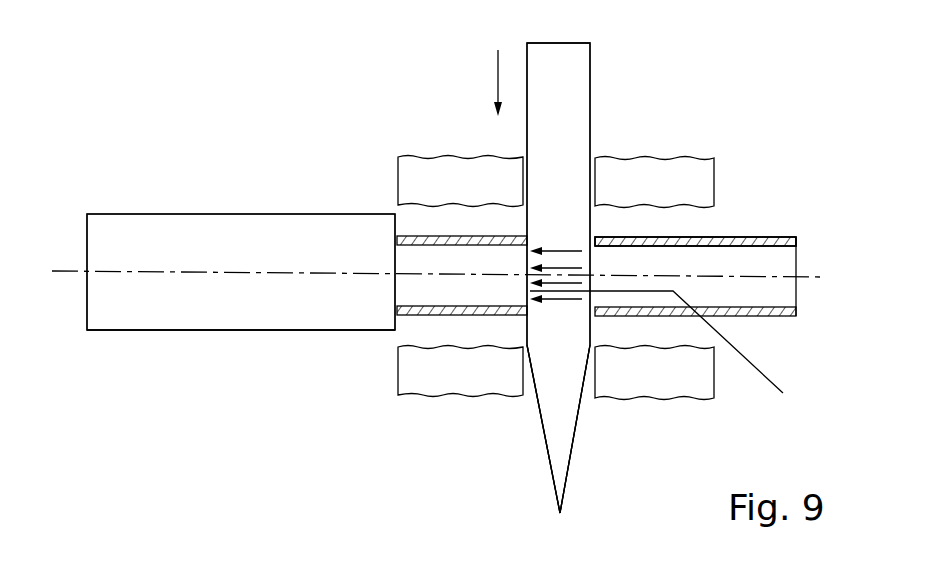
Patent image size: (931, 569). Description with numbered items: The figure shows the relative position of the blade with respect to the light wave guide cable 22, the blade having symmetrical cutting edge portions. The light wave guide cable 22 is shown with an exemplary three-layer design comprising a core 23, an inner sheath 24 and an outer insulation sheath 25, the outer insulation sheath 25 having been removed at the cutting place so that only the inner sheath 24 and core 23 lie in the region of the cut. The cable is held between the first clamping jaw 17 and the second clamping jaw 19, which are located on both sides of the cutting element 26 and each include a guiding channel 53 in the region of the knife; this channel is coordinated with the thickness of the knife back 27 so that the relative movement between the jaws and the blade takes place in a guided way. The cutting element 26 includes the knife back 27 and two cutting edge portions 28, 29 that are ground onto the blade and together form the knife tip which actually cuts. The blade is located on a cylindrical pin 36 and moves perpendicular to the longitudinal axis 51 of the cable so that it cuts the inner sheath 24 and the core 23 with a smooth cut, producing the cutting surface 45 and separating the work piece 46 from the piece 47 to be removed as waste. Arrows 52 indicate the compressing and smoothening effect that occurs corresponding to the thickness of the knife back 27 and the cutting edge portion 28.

The first clamping jaw 17 is at (437, 172).
The second clamping jaw 19 is at (422, 384).
The light wave guide cable 22 is at (182, 178).
The core 23 is at (757, 263).
The inner sheath 24 is at (742, 242).
The outer insulation sheath 25 is at (129, 236).
The cutting element 26 is at (604, 56).
The knife back 27 is at (560, 106).
The cutting edge portion 28 is at (545, 449).
The cutting edge portion 29 is at (572, 458).
The cylindrical pin 36 is at (498, 80).
The cutting surface 45 is at (673, 350).
The work piece 46 is at (289, 342).
The piece to be removed 47 is at (725, 215).
The longitudinal axis 51 is at (260, 272).
The arrows 52 is at (555, 267).
The guiding channel 53 is at (593, 156).